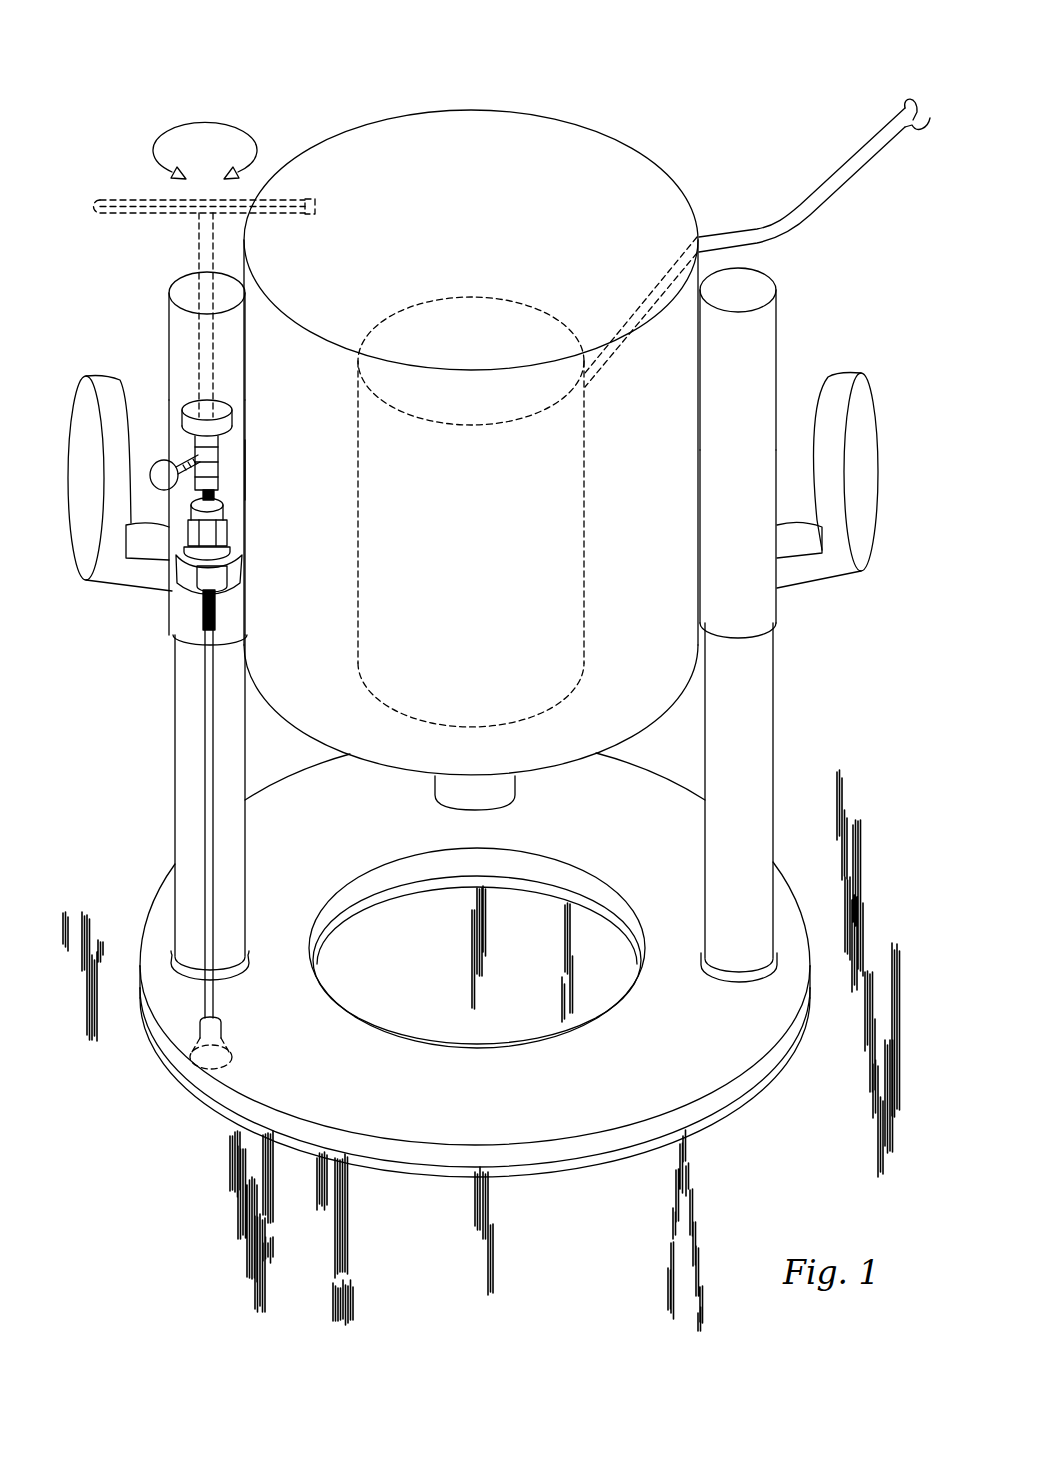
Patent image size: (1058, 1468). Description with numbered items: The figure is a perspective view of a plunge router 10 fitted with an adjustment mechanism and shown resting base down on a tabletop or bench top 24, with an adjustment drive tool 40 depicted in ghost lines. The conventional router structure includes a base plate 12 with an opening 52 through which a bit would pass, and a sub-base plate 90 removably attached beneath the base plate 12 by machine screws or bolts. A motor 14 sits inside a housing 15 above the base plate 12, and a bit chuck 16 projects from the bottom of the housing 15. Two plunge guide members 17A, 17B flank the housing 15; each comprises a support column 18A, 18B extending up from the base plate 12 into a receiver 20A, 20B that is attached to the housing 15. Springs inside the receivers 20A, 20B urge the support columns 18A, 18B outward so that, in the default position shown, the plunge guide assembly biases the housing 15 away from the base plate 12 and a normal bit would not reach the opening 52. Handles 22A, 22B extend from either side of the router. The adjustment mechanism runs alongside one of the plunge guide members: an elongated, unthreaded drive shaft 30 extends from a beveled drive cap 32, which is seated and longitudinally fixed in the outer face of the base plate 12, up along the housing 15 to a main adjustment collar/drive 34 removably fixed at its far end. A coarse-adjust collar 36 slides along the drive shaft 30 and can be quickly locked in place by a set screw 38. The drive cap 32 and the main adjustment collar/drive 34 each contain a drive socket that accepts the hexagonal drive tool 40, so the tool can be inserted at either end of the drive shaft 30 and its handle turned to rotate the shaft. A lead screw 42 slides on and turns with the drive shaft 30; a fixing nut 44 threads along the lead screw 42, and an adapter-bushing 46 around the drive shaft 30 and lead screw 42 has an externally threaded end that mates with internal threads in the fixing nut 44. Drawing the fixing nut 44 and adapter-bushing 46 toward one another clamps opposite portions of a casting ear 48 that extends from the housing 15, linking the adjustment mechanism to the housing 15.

The plunge router 10 is at (587, 82).
The base plate 12 is at (794, 1027).
The motor 14 is at (522, 497).
The housing 15 is at (461, 110).
The bit chuck 16 is at (513, 790).
The plunge guide member 17A is at (168, 325).
The plunge guide member 17B is at (777, 383).
The support column 18A is at (191, 684).
The support column 18B is at (763, 677).
The receiver 20A is at (178, 380).
The receiver 20B is at (752, 342).
The handle 22A is at (102, 395).
The handle 22B is at (857, 420).
The tabletop or bench top 24 is at (597, 1236).
The drive shaft 30 is at (207, 732).
The drive cap 32 is at (196, 1076).
The main adjustment collar/drive 34 is at (222, 412).
The coarse-adjust collar 36 is at (218, 462).
The set screw 38 is at (167, 457).
The drive tool 40 is at (205, 268).
The lead screw 42 is at (230, 471).
The fixing nut 44 is at (233, 525).
The adapter-bushing 46 is at (224, 575).
The casting ear 48 is at (185, 570).
The opening 52 is at (580, 886).
The sub-base plate 90 is at (734, 1099).